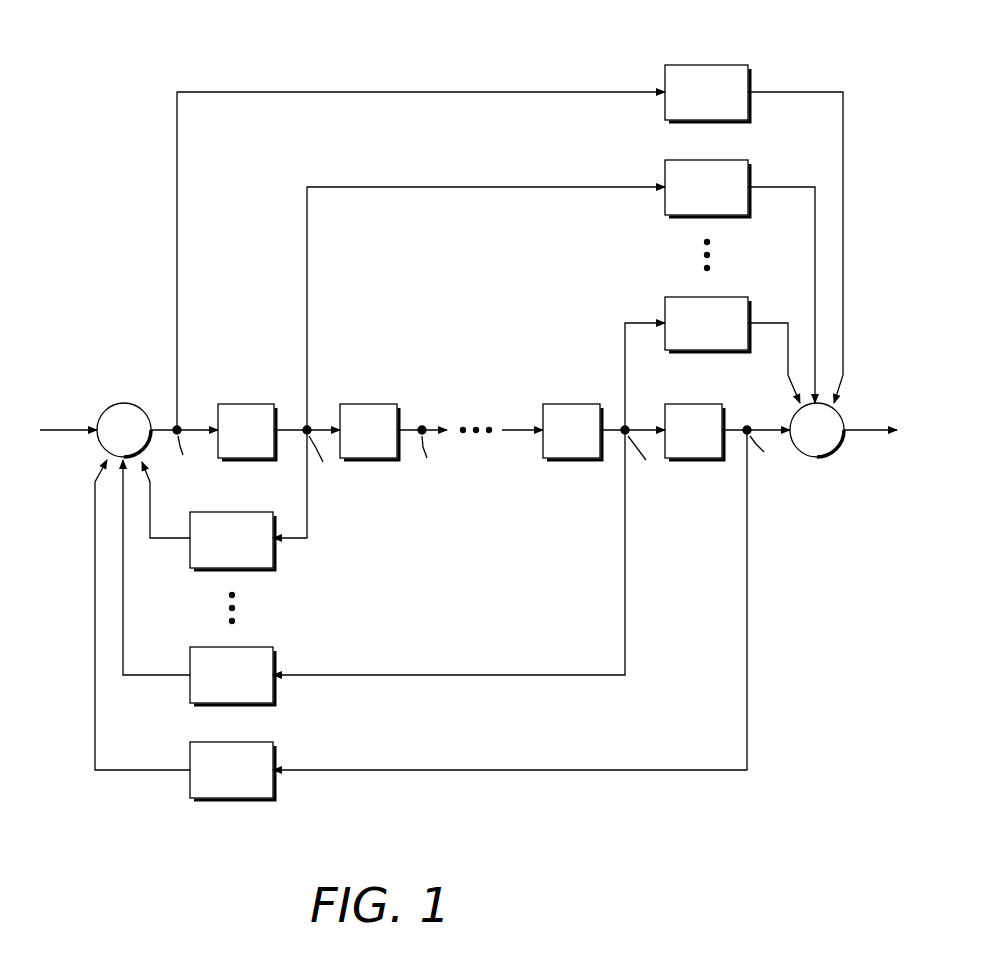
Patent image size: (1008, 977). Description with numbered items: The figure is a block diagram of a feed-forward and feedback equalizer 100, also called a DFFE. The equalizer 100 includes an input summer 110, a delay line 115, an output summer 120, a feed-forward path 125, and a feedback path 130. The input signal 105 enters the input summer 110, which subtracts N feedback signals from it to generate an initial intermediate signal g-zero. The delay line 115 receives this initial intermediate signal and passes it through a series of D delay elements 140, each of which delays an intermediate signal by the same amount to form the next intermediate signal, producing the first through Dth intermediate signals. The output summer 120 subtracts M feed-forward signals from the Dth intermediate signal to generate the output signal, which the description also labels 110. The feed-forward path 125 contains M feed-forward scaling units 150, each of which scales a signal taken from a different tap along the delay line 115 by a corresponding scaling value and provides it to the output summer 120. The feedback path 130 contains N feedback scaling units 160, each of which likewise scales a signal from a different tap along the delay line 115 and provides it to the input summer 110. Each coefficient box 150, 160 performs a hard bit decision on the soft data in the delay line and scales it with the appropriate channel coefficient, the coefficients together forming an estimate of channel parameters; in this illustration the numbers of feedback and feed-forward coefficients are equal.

The equalizer 100 is at (262, 34).
The input signal x(n) 105 is at (58, 398).
The input summer 110 is at (124, 403).
The delay line 115 is at (474, 398).
The output summer 120 is at (819, 460).
The feed-forward path 125 is at (497, 70).
The feedback path 130 is at (433, 650).
The delay element 140 is at (250, 404).
The feed-forward scaling unit 150 is at (730, 63).
The feedback scaling unit 160 is at (250, 512).